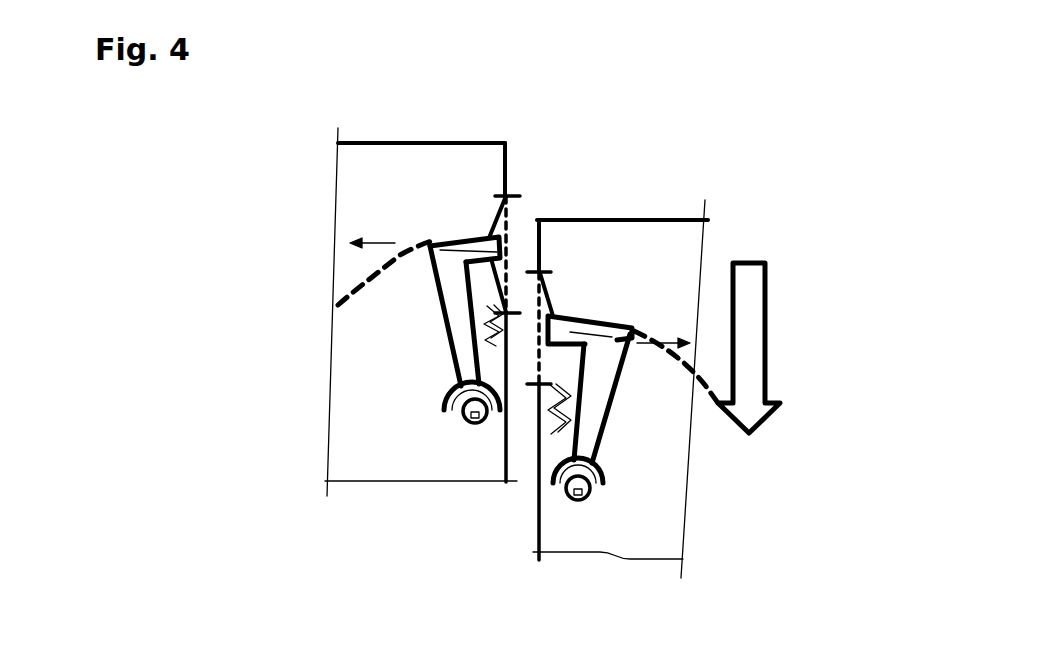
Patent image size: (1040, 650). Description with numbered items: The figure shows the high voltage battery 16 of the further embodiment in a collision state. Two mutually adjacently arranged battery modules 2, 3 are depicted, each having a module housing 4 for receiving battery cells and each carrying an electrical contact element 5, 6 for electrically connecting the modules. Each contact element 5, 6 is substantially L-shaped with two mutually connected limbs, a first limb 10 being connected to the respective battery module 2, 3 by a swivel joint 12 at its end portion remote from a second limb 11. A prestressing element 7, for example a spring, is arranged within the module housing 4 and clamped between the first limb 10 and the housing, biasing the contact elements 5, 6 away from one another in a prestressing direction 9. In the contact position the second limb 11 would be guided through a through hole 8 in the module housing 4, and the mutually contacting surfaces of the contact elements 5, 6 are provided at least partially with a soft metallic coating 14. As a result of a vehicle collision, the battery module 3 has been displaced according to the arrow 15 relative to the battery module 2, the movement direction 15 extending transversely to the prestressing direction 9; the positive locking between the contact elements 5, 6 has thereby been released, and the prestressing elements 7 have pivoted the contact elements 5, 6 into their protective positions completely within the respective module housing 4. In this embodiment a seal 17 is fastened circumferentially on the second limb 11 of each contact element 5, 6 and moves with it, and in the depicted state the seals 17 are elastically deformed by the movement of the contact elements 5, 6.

The battery module 2 is at (346, 138).
The battery module 3 is at (683, 212).
The module housing 4 is at (372, 143).
The electrical contact element 5 is at (432, 315).
The electrical contact element 6 is at (612, 403).
The prestressing element 7 is at (493, 410).
The through hole 8 is at (510, 195).
The prestressing direction 9 is at (373, 240).
The first limb 10 is at (460, 343).
The second limb 11 is at (400, 255).
The swivel joint 12 is at (477, 425).
The soft metallic coating 14 is at (430, 248).
The movement direction 15 is at (743, 330).
The high voltage battery 16 is at (853, 337).
The seal 17 is at (484, 233).